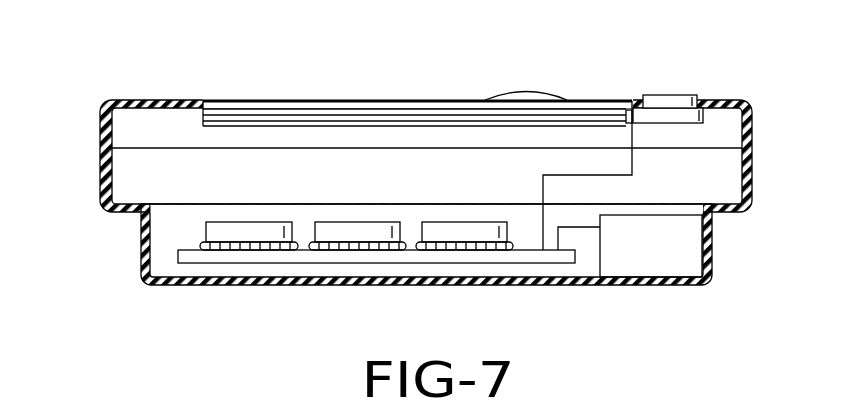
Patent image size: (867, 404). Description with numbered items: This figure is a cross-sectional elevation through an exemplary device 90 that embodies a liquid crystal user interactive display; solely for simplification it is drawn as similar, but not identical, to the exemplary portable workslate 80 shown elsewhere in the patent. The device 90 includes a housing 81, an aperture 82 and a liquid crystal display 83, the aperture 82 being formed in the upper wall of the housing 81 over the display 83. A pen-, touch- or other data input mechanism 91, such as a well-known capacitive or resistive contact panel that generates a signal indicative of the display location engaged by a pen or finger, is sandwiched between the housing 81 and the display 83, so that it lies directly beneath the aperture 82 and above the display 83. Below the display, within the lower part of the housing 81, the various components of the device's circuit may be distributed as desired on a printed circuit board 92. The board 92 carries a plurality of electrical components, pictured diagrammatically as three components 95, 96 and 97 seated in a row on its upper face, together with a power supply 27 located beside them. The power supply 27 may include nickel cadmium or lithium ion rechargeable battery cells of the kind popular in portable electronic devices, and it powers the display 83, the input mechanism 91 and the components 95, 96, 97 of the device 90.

The portable workslate 80 is at (456, 163).
The housing 81 is at (750, 117).
The aperture 82 is at (216, 103).
The device 90 is at (299, 88).
The data input mechanism 91 is at (422, 101).
The liquid crystal display 83 is at (598, 123).
The printed circuit board 92 is at (538, 258).
The electrical component 95 is at (238, 233).
The electrical component 96 is at (357, 232).
The electrical component 97 is at (463, 232).
The power supply 27 is at (650, 267).